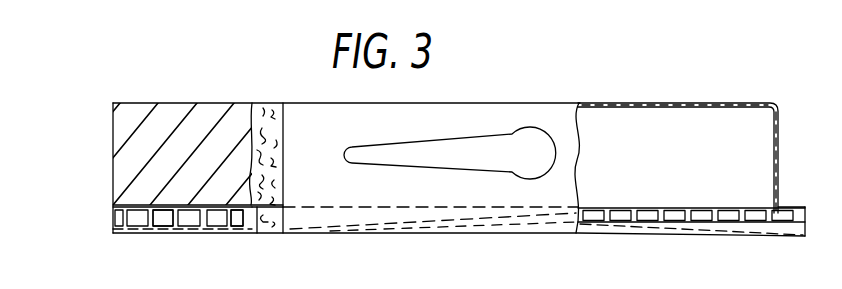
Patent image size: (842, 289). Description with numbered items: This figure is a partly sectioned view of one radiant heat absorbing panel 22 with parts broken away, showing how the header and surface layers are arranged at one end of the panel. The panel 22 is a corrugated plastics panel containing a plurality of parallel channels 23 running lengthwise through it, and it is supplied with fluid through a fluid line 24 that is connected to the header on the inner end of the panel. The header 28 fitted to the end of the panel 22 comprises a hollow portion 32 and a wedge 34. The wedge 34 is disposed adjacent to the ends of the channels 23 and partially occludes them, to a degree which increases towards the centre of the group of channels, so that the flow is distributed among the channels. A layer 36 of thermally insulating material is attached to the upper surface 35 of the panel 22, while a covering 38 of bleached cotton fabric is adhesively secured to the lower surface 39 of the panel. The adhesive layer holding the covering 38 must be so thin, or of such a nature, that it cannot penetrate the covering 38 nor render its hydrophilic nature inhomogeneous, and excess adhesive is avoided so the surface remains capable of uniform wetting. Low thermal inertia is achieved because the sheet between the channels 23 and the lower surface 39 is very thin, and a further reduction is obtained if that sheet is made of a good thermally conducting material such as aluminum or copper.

The corrugated plastics panel 22 is at (112, 223).
The parallel channels 23 is at (215, 217).
The fluid line 24 is at (532, 133).
The header 28 is at (782, 150).
The hollow portion 32 is at (668, 145).
The wedge 34 is at (702, 237).
The upper surface 35 is at (233, 200).
The layer of thermally insulating material 36 is at (207, 103).
The covering of bleached cotton fabric 38 is at (227, 228).
The lower surface 39 is at (165, 228).